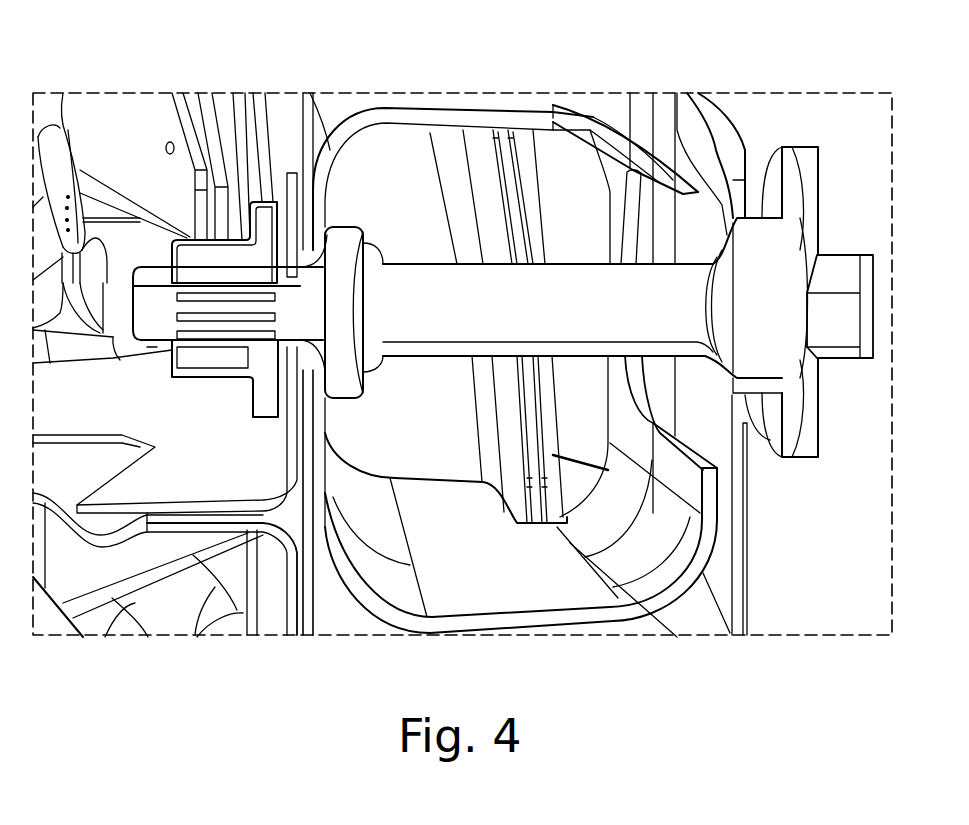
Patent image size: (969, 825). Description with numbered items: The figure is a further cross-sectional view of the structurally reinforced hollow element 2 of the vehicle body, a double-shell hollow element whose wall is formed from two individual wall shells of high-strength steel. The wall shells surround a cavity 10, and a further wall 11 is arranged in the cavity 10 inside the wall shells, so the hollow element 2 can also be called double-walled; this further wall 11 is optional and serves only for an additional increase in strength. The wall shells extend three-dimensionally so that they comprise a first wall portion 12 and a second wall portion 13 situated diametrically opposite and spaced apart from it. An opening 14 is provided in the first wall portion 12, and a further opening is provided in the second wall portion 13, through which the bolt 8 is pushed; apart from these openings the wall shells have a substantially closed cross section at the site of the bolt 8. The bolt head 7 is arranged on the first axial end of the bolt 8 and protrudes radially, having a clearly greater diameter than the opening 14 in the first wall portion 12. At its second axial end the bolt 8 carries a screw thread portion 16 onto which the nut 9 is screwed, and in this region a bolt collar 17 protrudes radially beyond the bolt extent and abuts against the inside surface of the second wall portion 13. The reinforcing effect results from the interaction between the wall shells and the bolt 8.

The structurally reinforced hollow element 2 is at (763, 597).
The bolt head 7 is at (803, 197).
The bolt 8 is at (542, 317).
The nut 9 is at (210, 362).
The cavity 10 is at (428, 442).
The further wall 11 is at (443, 108).
The first wall portion 12 is at (750, 538).
The second wall portion 13 is at (296, 112).
The opening 14 is at (723, 193).
The screw thread portion 16 is at (173, 307).
The bolt collar 17 is at (372, 237).